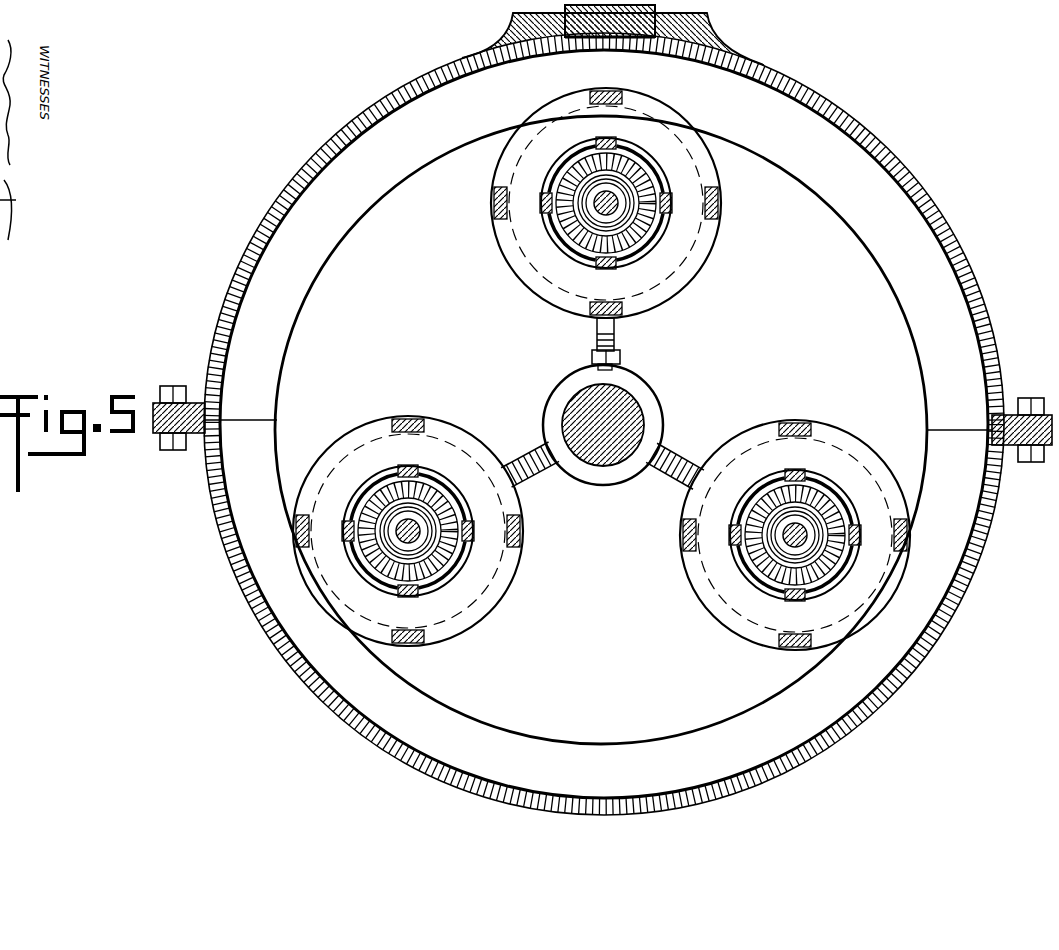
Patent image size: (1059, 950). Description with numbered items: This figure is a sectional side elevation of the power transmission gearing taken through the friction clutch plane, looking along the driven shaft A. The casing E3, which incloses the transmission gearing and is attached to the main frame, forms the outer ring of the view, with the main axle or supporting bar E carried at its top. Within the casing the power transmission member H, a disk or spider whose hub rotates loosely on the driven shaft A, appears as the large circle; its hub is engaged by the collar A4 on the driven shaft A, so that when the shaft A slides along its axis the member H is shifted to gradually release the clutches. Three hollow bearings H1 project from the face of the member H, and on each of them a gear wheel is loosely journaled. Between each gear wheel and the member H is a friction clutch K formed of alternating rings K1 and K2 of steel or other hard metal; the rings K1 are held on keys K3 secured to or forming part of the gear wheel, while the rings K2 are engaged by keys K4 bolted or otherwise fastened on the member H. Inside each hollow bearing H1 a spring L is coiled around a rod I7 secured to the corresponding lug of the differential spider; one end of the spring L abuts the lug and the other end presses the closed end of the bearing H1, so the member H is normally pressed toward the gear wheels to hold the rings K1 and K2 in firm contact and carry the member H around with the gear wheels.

The main axle or supporting bar E is at (588, 23).
The casing E3 is at (248, 246).
The power transmission member H is at (402, 193).
The hollow bearing H1 is at (643, 249).
The driven shaft A is at (627, 408).
The collar A4 is at (578, 388).
The friction clutch K is at (601, 369).
The friction clutch ring K1 is at (856, 580).
The friction clutch ring K2 is at (654, 113).
The key K3 is at (627, 148).
The key K4 is at (618, 100).
The spring L is at (568, 240).
The rod I7 is at (621, 213).